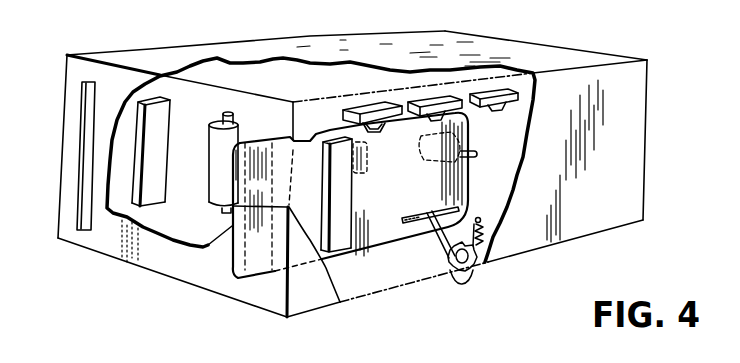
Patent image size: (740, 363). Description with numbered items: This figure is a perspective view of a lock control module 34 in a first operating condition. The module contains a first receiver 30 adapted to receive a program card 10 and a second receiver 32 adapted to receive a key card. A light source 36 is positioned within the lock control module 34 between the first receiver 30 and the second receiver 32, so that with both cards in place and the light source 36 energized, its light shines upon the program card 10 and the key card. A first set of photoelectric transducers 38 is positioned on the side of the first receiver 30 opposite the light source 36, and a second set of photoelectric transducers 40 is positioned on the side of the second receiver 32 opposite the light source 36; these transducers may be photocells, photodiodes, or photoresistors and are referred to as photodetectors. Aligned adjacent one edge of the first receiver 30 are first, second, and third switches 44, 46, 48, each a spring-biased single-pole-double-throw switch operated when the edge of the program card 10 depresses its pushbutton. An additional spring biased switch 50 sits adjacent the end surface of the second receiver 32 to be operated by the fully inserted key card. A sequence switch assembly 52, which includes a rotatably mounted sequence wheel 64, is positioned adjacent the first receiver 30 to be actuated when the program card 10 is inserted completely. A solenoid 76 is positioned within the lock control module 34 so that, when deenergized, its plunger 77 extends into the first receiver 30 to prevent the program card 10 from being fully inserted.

The program card 10 is at (232, 272).
The first receiver 30 is at (277, 135).
The second receiver 32 is at (85, 160).
The lock control module 34 is at (192, 48).
The light source 36 is at (217, 163).
The first set of photoelectric transducers 38 is at (340, 232).
The second set of photoelectric transducers 40 is at (154, 182).
The first switch 44 is at (367, 110).
The second switch 46 is at (430, 111).
The third switch 48 is at (507, 107).
The additional spring biased switch 50 is at (368, 162).
The sequence switch assembly 52 is at (453, 277).
The sequence wheel 64 is at (467, 272).
The solenoid 76 is at (428, 162).
The plunger 77 is at (477, 155).